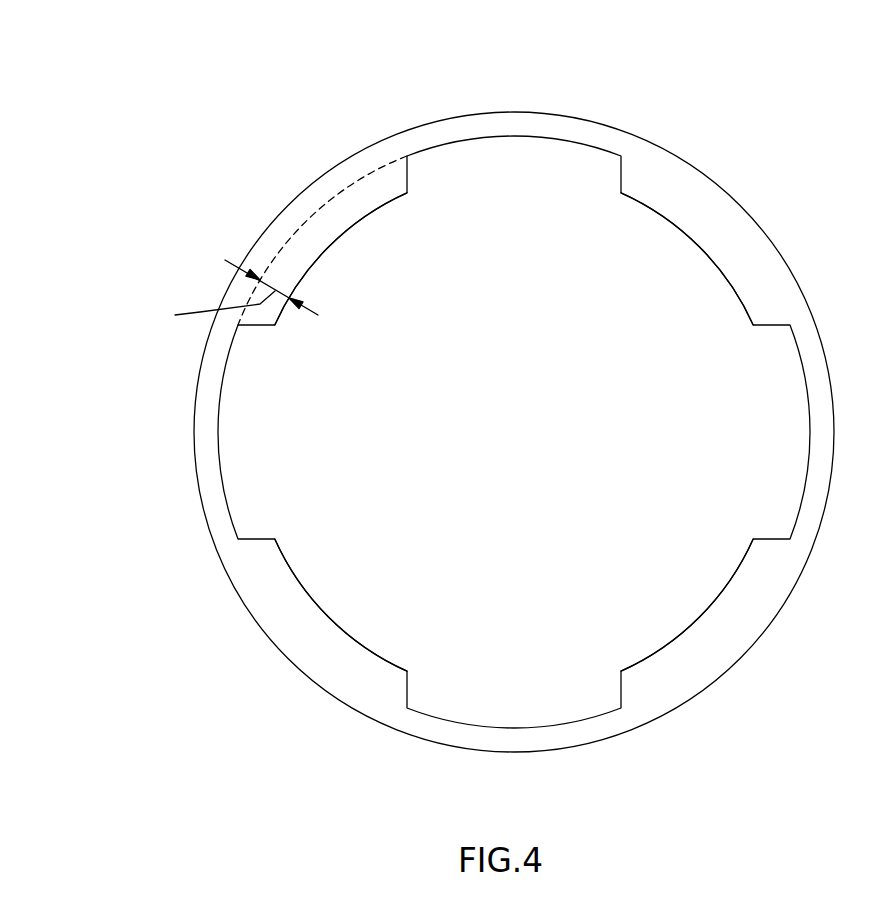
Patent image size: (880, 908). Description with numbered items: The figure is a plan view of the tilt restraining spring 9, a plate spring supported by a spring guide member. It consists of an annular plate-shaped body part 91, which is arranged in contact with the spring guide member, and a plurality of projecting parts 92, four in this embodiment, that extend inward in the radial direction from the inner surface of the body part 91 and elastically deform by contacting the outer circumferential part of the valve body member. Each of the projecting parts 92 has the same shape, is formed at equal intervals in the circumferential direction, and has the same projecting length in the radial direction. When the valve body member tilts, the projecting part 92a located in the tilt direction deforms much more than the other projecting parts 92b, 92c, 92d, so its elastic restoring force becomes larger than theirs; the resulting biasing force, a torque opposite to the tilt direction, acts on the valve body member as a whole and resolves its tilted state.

The tilt restraining spring 9 is at (434, 386).
The body part 91 is at (513, 110).
The projecting parts 92 is at (514, 432).
The projecting part 92a is at (333, 248).
The projecting part 92b is at (696, 250).
The projecting part 92c is at (693, 613).
The projecting part 92d is at (334, 615).